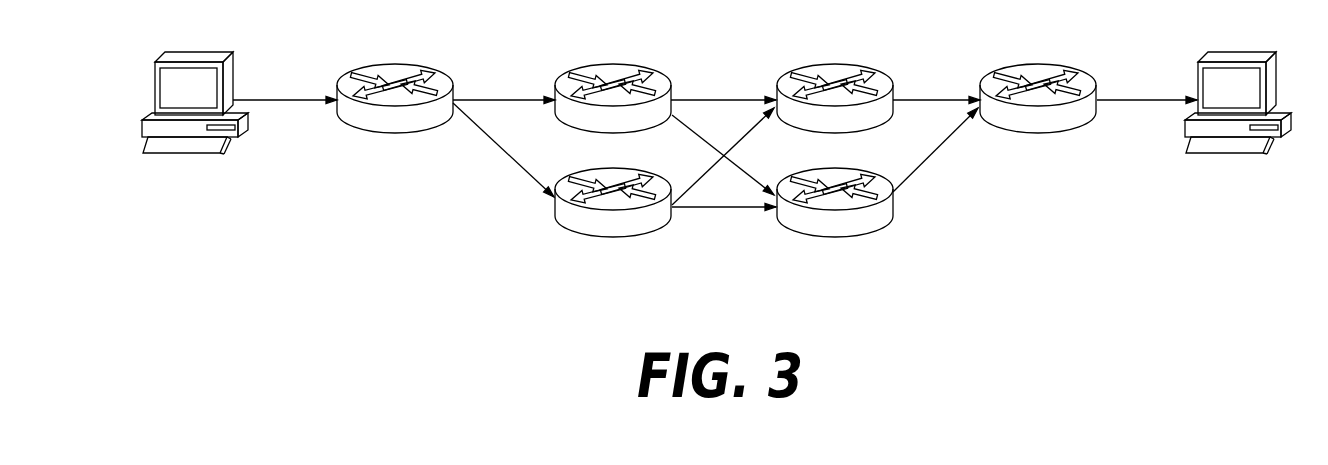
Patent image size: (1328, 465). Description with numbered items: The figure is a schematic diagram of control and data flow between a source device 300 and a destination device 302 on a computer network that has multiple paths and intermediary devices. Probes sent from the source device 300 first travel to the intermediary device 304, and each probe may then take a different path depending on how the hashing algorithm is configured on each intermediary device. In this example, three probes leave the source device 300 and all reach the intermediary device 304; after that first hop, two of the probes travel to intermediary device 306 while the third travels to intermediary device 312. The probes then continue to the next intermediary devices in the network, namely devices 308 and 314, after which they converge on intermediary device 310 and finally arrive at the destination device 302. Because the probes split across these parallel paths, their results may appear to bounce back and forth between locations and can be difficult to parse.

The source device 300 is at (155, 77).
The destination device 302 is at (1242, 52).
The intermediary device 304 is at (413, 64).
The intermediary device 306 is at (602, 64).
The intermediary device 308 is at (833, 64).
The intermediary device 310 is at (1032, 64).
The intermediary device 312 is at (672, 214).
The intermediary device 314 is at (893, 214).